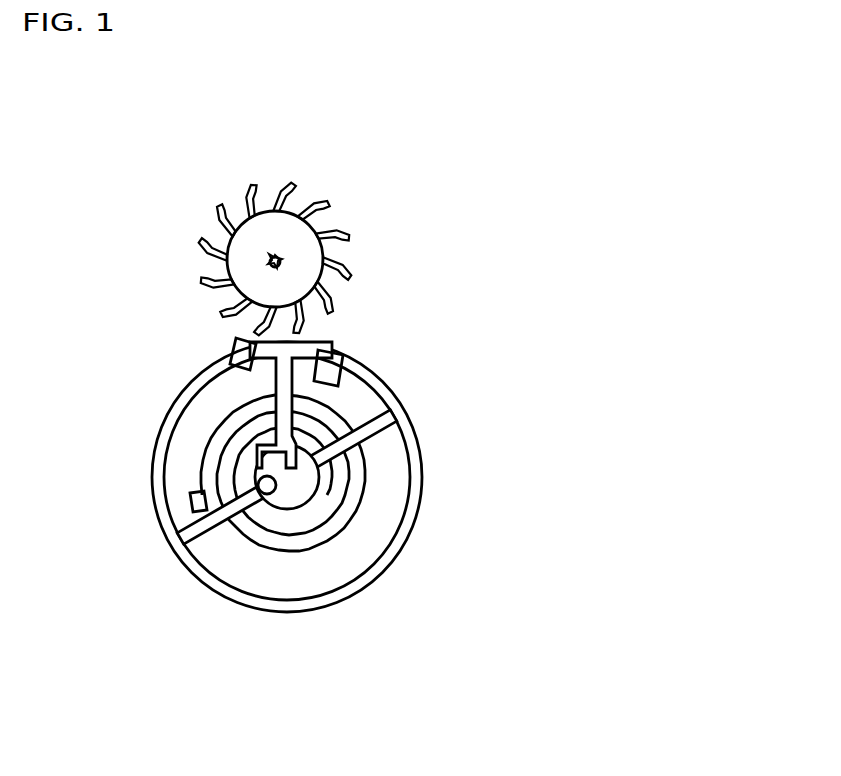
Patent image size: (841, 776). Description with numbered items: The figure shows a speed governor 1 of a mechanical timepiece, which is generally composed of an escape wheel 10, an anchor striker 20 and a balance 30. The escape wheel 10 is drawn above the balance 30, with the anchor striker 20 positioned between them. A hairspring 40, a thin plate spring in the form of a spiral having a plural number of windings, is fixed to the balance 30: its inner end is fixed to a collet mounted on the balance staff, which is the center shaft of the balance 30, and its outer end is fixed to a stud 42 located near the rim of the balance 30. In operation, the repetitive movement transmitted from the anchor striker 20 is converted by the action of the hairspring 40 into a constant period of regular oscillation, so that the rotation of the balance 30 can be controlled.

The speed governor 1 is at (557, 215).
The escape wheel 10 is at (323, 212).
The anchor striker 20 is at (240, 353).
The balance 30 is at (410, 428).
The hairspring 40 is at (345, 540).
The stud 42 is at (200, 505).